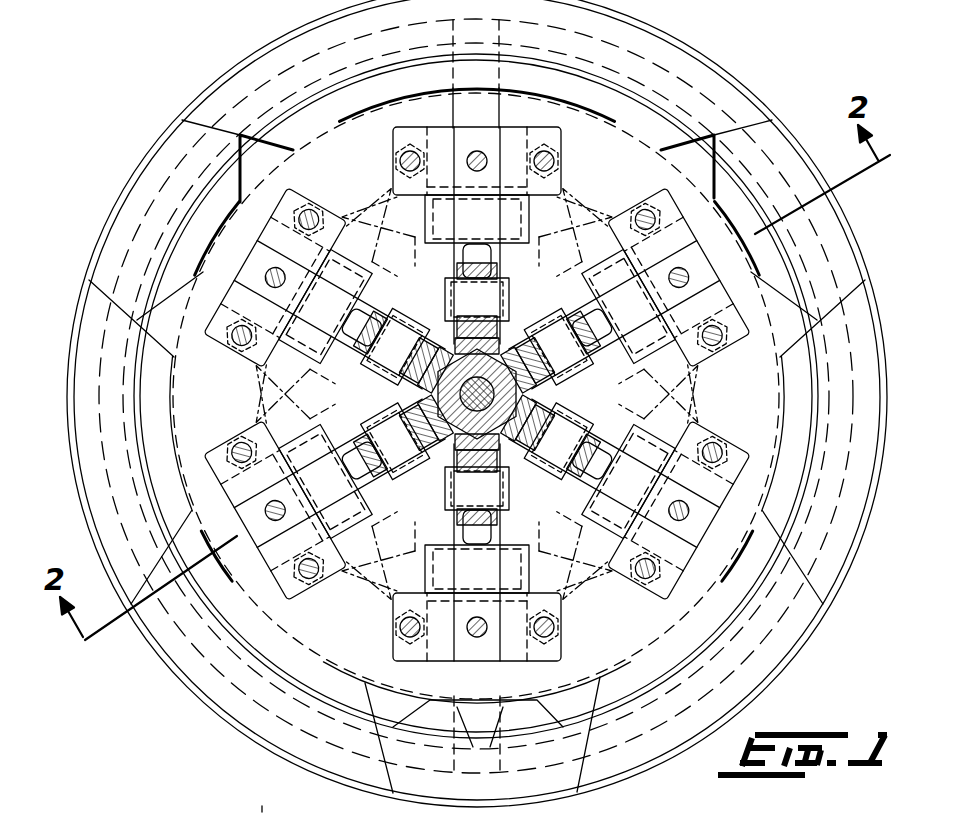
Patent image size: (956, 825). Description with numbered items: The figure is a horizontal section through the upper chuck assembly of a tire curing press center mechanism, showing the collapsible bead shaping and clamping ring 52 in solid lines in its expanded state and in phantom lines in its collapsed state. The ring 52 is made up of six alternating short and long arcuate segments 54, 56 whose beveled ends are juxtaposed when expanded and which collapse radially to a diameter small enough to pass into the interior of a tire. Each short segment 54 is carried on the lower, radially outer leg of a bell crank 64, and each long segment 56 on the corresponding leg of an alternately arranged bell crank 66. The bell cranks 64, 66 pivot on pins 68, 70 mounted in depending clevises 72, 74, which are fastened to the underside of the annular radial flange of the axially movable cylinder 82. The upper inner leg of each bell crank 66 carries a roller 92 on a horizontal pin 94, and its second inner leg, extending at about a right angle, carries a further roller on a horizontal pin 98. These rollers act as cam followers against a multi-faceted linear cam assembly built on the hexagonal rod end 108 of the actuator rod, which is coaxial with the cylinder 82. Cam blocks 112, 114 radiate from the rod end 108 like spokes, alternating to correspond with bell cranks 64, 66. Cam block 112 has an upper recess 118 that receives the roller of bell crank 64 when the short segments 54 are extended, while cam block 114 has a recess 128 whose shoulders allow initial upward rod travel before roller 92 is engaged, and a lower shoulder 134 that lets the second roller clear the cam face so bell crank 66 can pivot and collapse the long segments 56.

The bead shaping and clamping ring 52 is at (215, 724).
The short arcuate segment 54 is at (167, 148).
The long arcuate segment 56 is at (290, 48).
The bell crank 64 is at (376, 322).
The bell crank 66 is at (368, 443).
The pin 68 is at (312, 357).
The pin 70 is at (300, 442).
The clevis 72 is at (298, 197).
The clevis 74 is at (298, 603).
The cylinder 82 is at (274, 815).
The roller 92 is at (597, 345).
The horizontal pin 94 is at (447, 465).
The horizontal pin 98 is at (425, 508).
The rod end 108 is at (508, 442).
The cam block 112 is at (455, 343).
The cam block 114 is at (425, 396).
The recess 118 is at (545, 392).
The recess 128 is at (522, 320).
The lower shoulder 134 is at (140, 393).